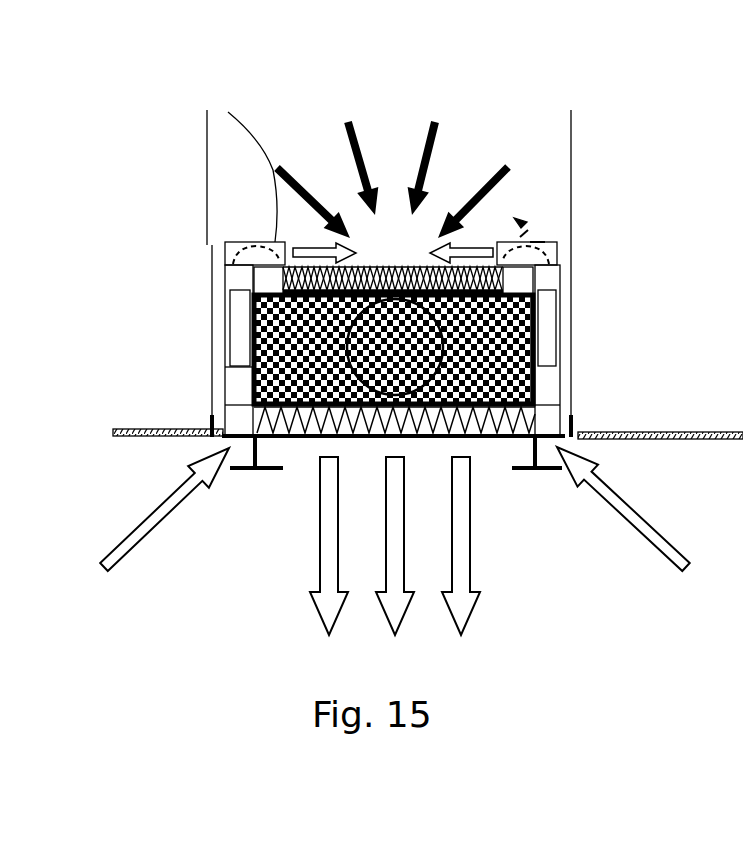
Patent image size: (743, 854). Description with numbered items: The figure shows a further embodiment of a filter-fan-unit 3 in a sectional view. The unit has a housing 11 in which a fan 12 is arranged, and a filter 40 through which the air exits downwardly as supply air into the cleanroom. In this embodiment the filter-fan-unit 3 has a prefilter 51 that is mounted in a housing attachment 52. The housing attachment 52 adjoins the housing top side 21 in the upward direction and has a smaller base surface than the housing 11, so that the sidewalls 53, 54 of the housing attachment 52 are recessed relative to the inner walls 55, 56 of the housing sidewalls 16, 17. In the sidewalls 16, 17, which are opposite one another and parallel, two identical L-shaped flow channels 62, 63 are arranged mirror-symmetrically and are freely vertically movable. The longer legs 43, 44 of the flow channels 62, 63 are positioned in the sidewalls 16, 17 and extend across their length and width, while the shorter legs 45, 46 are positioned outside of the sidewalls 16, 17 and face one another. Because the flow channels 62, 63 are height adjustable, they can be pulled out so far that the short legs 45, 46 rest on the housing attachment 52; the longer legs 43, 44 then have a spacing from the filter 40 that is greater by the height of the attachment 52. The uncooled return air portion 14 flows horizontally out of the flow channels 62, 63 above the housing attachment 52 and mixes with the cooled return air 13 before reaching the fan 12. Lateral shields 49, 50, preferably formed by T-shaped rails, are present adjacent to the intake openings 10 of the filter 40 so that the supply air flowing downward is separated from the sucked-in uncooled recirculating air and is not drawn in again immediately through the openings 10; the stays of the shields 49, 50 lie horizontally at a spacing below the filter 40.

The filter-fan-unit 3 is at (613, 236).
The openings 10 is at (237, 445).
The housing 11 is at (533, 342).
The fan 12 is at (468, 440).
The cooled portion of the recirculating air 13 is at (392, 169).
The uncooled portion of the recirculating air 14 is at (405, 238).
The sidewall 16 is at (212, 335).
The sidewall 17 is at (537, 318).
The housing top side 21 is at (212, 242).
The filter 40 is at (302, 447).
The longer leg 43 is at (223, 353).
The longer leg 44 is at (553, 357).
The shorter leg 45 is at (233, 162).
The shorter leg 46 is at (548, 240).
The shield 49 is at (253, 478).
The shield 50 is at (528, 478).
The prefilter 51 is at (497, 242).
The housing attachment 52 is at (503, 275).
The sidewall of the housing attachment 53 is at (283, 265).
The sidewall of the housing attachment 54 is at (536, 240).
The inner wall 55 is at (252, 373).
The inner wall 56 is at (535, 382).
The flow channel 62 is at (247, 232).
The flow channel 63 is at (522, 240).